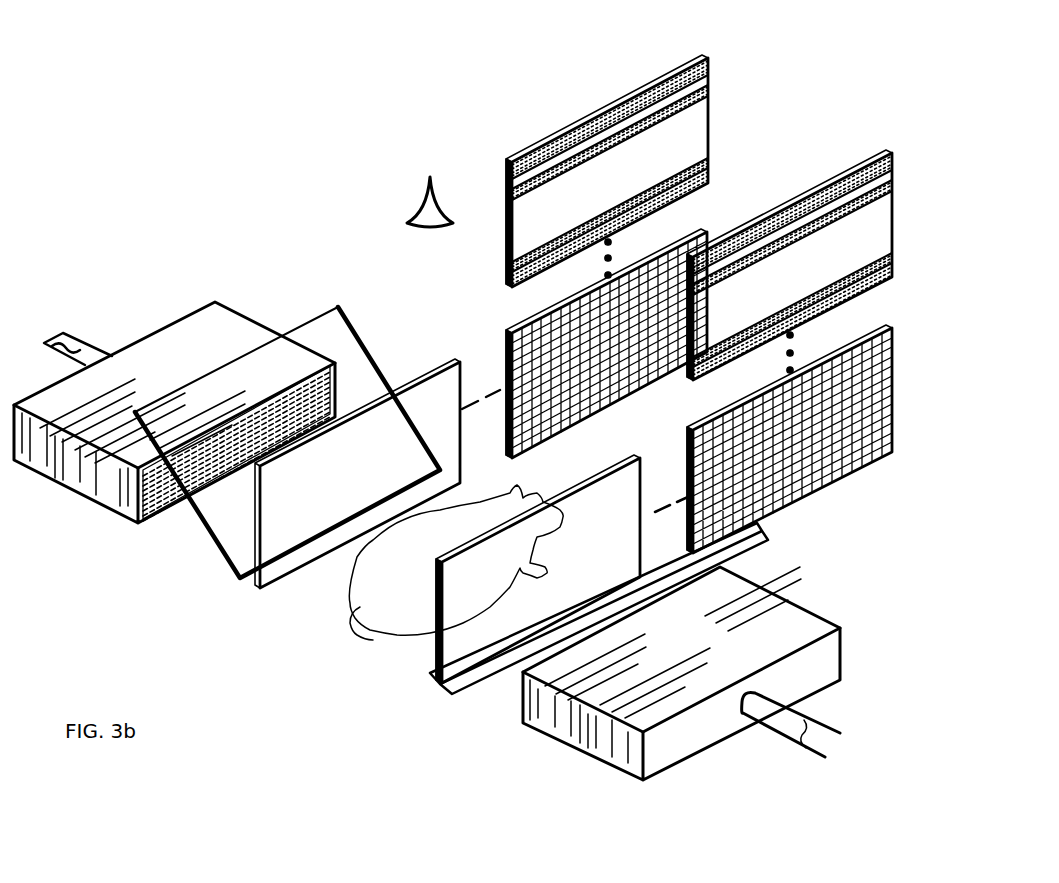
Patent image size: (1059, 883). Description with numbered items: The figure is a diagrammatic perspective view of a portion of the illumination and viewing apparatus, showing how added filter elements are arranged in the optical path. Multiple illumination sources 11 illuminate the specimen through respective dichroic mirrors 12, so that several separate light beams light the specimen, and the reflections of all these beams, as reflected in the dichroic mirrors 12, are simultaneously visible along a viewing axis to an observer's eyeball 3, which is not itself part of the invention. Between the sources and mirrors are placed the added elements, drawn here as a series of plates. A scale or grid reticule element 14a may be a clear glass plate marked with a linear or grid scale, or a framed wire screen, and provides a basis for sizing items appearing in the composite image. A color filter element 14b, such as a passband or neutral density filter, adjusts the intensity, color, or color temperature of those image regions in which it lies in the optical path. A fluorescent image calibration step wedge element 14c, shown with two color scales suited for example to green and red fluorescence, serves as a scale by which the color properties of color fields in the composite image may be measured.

The observer's eyeball 3 is at (412, 214).
The illumination source 11 is at (232, 317).
The dichroic mirror 12 is at (340, 308).
The scale or grid reticule element 14a is at (435, 368).
The color filter element 14b is at (696, 233).
The fluorescent image calibration step wedge element 14c is at (700, 60).